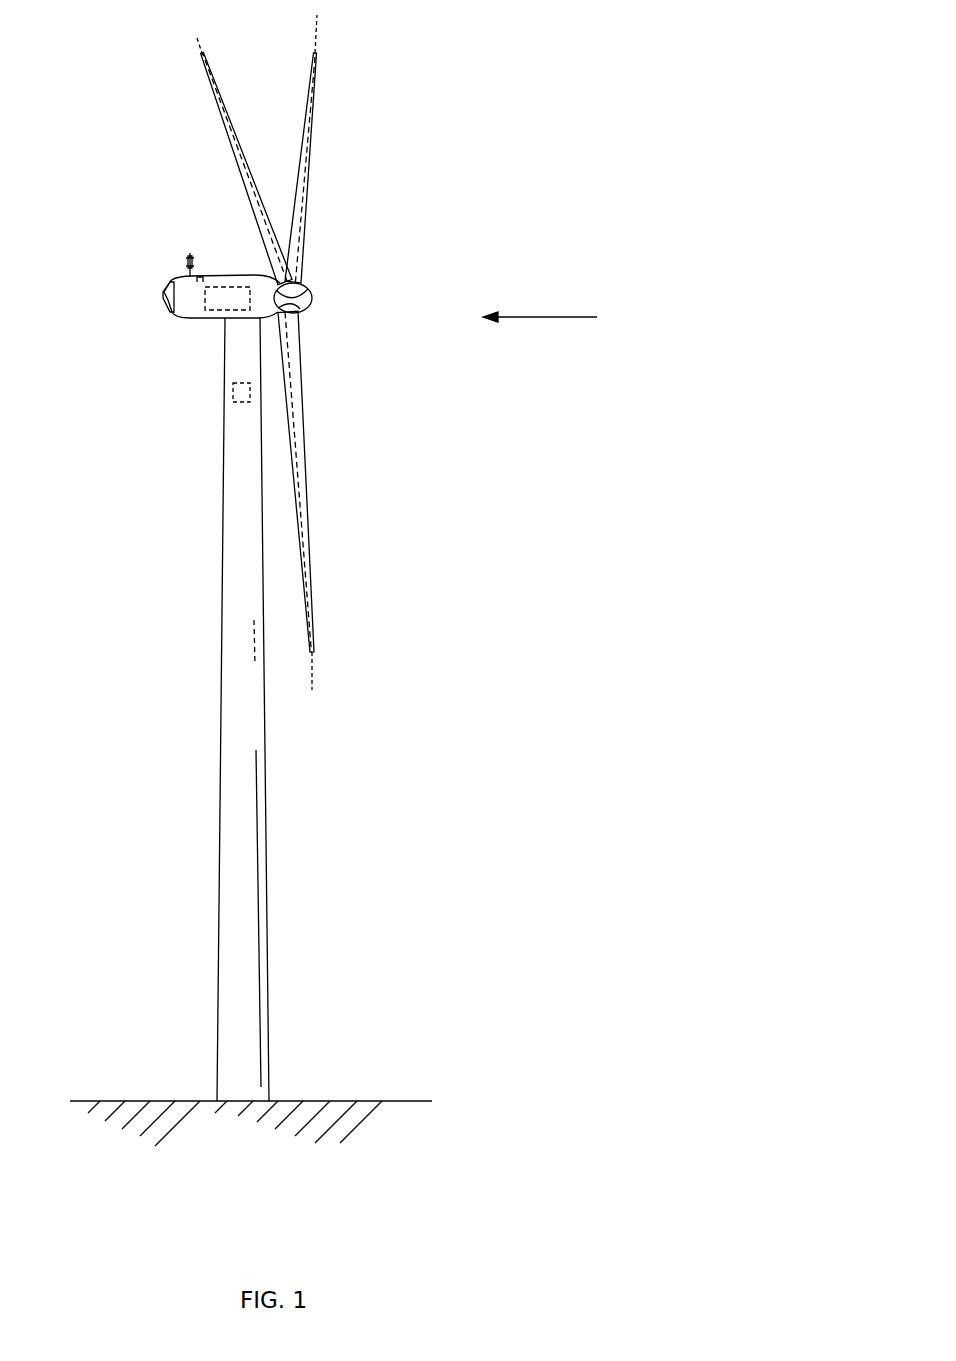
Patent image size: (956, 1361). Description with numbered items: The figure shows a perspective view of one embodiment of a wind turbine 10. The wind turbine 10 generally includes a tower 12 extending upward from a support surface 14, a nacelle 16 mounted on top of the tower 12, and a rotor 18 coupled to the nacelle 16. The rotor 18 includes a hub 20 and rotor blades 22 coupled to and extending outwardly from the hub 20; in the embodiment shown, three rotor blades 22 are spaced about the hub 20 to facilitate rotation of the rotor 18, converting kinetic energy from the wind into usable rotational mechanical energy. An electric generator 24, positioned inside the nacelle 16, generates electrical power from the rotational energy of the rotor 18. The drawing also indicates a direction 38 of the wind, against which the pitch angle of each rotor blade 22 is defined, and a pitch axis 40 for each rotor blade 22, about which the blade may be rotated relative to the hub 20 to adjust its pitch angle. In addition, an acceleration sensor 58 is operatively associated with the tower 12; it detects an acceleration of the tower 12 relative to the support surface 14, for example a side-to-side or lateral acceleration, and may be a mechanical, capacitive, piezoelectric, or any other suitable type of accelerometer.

The wind turbine 10 is at (592, 117).
The tower 12 is at (233, 822).
The support surface 14 is at (150, 1101).
The nacelle 16 is at (198, 322).
The rotor 18 is at (318, 275).
The hub 20 is at (312, 302).
The rotor blade 22 is at (305, 95).
The electric generator 24 is at (220, 283).
The direction of the wind 38 is at (540, 317).
The pitch axis 40 is at (200, 58).
The acceleration sensor 58 is at (236, 402).